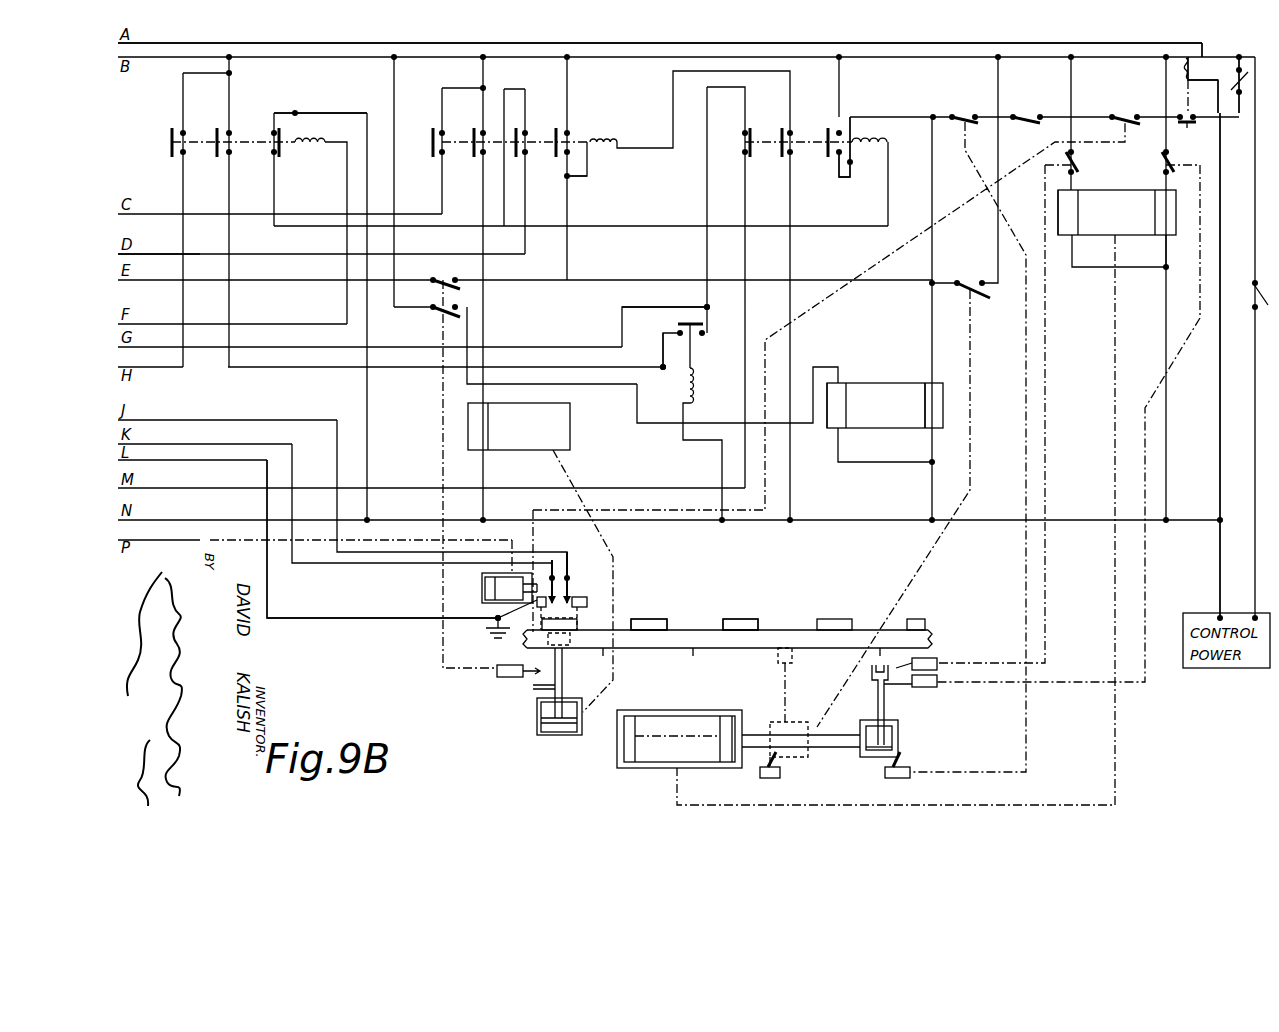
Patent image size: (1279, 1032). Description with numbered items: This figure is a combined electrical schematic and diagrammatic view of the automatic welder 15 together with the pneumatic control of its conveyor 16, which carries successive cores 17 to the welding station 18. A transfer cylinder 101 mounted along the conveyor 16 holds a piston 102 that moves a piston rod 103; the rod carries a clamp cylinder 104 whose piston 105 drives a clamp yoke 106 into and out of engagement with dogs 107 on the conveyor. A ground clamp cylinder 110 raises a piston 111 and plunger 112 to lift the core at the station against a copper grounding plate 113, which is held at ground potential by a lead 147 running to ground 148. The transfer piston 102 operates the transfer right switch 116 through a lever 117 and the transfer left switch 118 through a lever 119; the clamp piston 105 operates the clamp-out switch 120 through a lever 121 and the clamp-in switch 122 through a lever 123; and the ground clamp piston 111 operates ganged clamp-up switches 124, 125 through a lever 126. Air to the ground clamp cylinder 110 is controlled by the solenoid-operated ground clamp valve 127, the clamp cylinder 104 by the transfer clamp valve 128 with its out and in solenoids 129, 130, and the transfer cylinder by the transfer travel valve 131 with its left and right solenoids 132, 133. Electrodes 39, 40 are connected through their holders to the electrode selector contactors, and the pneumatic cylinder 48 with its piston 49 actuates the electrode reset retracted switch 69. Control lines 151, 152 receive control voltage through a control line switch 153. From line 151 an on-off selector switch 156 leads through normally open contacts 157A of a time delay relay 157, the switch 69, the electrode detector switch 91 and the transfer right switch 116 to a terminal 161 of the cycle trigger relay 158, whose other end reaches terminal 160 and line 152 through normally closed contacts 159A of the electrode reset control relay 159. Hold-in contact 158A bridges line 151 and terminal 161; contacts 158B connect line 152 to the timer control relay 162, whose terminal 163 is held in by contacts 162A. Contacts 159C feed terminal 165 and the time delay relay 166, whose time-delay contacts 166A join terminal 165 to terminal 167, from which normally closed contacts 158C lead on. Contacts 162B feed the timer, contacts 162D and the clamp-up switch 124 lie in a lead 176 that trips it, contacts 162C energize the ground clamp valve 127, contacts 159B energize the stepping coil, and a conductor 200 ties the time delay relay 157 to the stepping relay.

The automatic welder 15 is at (786, 601).
The conveyor 16 is at (680, 630).
The cores 17 is at (734, 618).
The welding station 18 is at (579, 593).
The electrode 39 is at (568, 581).
The electrode 40 is at (556, 578).
The pneumatic cylinder 48 is at (482, 576).
The piston 49 is at (486, 597).
The electrode reset retracted switch 69 is at (1122, 116).
The electrode detector switch 91 is at (1026, 116).
The transfer cylinder 101 is at (626, 766).
The piston 102 is at (722, 716).
The piston rod 103 is at (810, 748).
The clamp cylinder 104 is at (898, 730).
The piston 105 is at (872, 750).
The clamp yoke 106 is at (872, 668).
The dogs 107 is at (693, 652).
The ground clamp cylinder 110 is at (537, 730).
The piston 111 is at (541, 720).
The plunger 112 is at (565, 656).
The grounding plate 113 is at (588, 602).
The transfer right switch 116 is at (962, 116).
The lever 117 is at (901, 767).
The transfer left switch 118 is at (970, 282).
The lever 119 is at (760, 772).
The clamp-out switch 120 is at (1166, 163).
The lever 121 is at (918, 684).
The clamp-in switch 122 is at (1076, 170).
The lever 123 is at (916, 661).
The clamp-up switch 124 is at (432, 279).
The clamp-up switch 125 is at (432, 310).
The lever 126 is at (520, 677).
The ground clamp valve 127 is at (570, 439).
The transfer clamp valve 128 is at (892, 382).
The out solenoid 129 is at (838, 382).
The in solenoid 130 is at (932, 382).
The transfer travel valve 131 is at (1120, 192).
The left solenoid 132 is at (1078, 192).
The right solenoid 133 is at (1164, 238).
The lead 147 is at (285, 618).
The ground 148 is at (492, 620).
The control line 151 is at (876, 57).
The control line 152 is at (1210, 521).
The control line switch 153 is at (1252, 282).
The on-off selector switch 156 is at (1236, 84).
The time delay relay 157 is at (1186, 57).
The normally open contacts 157A is at (1186, 120).
The cycle trigger relay 158 is at (888, 142).
The hold-in contact 158A is at (826, 128).
The normally open contacts 158B is at (780, 128).
The normally closed contacts 158C is at (750, 157).
The electrode reset control relay 159 is at (306, 144).
The normally closed contacts 159A is at (292, 95).
The normally open contacts 159B is at (172, 126).
The normally open contacts 159C is at (214, 138).
The terminal 160 is at (295, 113).
The terminal 161 is at (850, 162).
The timer control relay 162 is at (592, 140).
The hold-in contacts 162A is at (550, 126).
The normally open contacts 162B is at (432, 128).
The normally open contacts 162C is at (474, 128).
The normally open contacts 162D is at (513, 126).
The terminal 163 is at (568, 176).
The terminal 165 is at (662, 366).
The time delay relay 166 is at (694, 382).
The normally open contacts 166A is at (676, 324).
The terminal 167 is at (708, 307).
The lead 176 is at (312, 252).
The conductor 200 is at (906, 43).